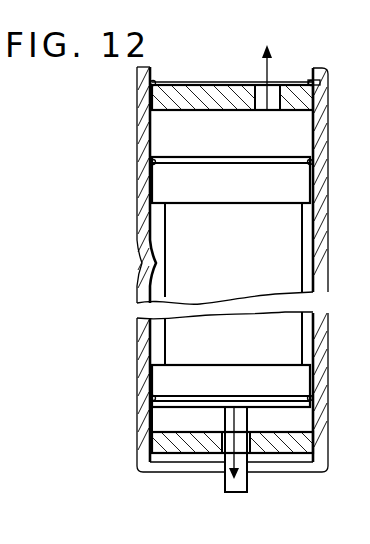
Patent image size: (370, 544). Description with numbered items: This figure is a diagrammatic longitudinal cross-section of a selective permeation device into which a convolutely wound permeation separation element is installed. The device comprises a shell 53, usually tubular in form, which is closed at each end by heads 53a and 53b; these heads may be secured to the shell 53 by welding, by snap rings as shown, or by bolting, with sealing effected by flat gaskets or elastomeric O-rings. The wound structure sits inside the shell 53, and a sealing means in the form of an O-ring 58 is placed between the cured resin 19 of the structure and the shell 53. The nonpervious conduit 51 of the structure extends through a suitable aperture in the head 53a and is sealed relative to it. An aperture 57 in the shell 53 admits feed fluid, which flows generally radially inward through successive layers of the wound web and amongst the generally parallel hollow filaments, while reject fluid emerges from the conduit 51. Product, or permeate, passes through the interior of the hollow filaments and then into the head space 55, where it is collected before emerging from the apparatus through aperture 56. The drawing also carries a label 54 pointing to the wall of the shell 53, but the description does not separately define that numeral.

The piston 19 is at (241, 197).
The piston rod / stem 51 is at (248, 487).
The cylinder housing 53 is at (137, 341).
The bottom end plate 53a is at (182, 450).
The top end plate 53b is at (208, 90).
The cylinder wall 54 is at (133, 130).
The chamber 55 is at (249, 144).
The outlet passage 56 is at (277, 92).
The inlet port 57 is at (169, 263).
The seal ring 58 is at (151, 165).